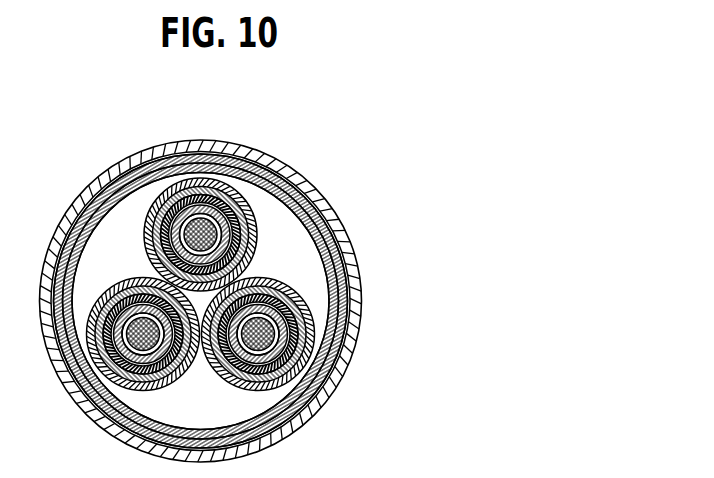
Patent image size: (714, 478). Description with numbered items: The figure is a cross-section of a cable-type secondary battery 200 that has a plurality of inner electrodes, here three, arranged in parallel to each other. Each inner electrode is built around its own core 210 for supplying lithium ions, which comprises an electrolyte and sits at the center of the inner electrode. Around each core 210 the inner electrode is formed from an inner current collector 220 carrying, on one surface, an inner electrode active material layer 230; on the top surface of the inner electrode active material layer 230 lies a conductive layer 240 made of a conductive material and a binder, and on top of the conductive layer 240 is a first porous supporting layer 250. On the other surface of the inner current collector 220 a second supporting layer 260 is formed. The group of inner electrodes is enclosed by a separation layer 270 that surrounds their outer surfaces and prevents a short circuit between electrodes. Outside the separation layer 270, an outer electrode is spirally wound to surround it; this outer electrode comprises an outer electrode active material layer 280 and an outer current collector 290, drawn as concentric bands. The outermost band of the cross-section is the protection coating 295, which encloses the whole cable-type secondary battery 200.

The cable-type secondary battery 200 is at (79, 156).
The core for supplying lithium ions 210 is at (171, 178).
The inner current collector 220 is at (218, 210).
The inner electrode active material layer 230 is at (244, 213).
The conductive layer 240 is at (258, 226).
The first supporting layer 250 is at (294, 233).
The second supporting layer 260 is at (201, 200).
The separation layer 270 is at (324, 243).
The outer electrode active material layer 280 is at (343, 258).
The outer current collector 290 is at (350, 254).
The protection coating 295 is at (352, 277).